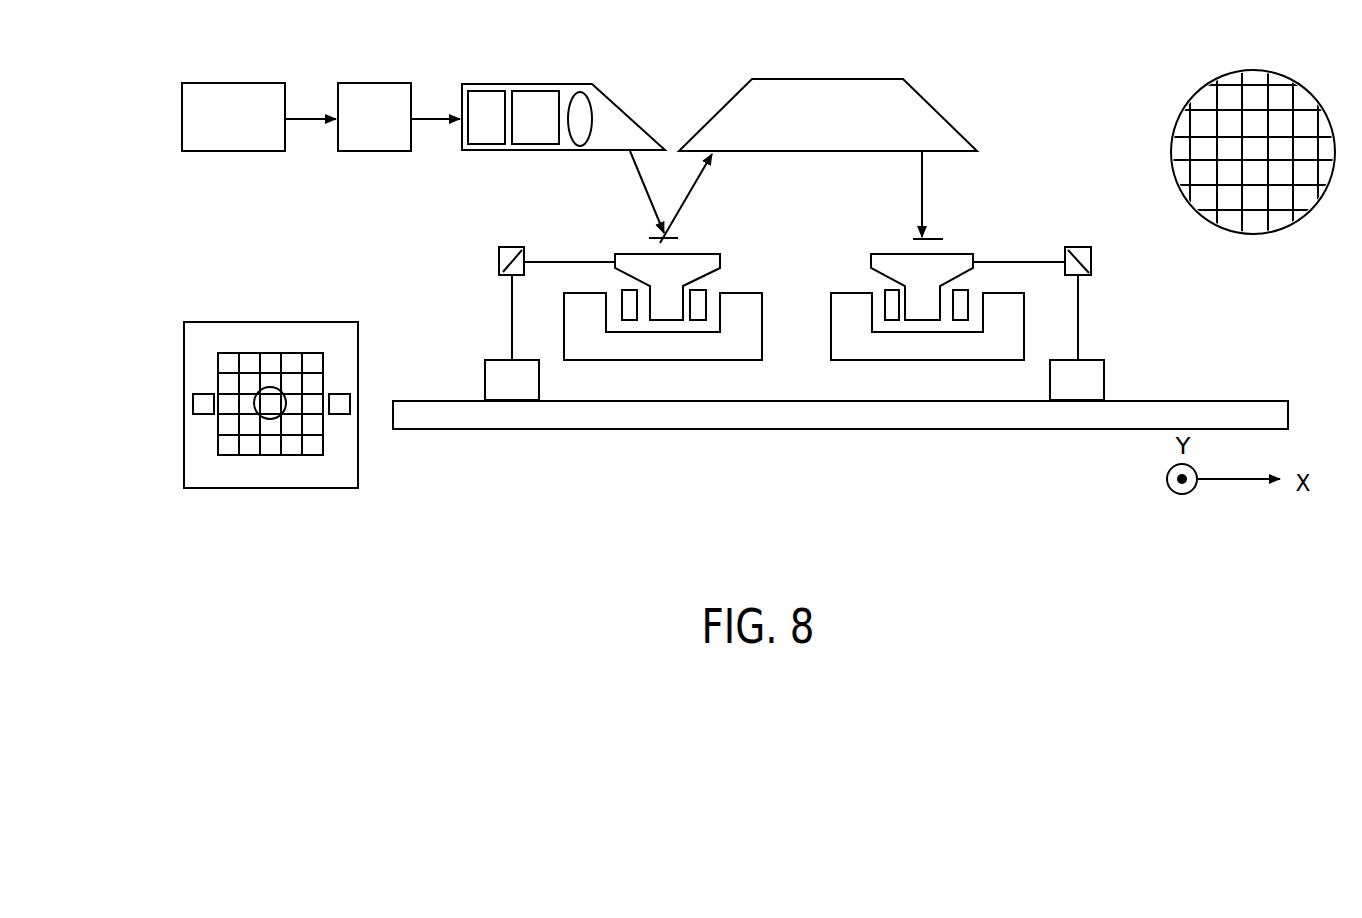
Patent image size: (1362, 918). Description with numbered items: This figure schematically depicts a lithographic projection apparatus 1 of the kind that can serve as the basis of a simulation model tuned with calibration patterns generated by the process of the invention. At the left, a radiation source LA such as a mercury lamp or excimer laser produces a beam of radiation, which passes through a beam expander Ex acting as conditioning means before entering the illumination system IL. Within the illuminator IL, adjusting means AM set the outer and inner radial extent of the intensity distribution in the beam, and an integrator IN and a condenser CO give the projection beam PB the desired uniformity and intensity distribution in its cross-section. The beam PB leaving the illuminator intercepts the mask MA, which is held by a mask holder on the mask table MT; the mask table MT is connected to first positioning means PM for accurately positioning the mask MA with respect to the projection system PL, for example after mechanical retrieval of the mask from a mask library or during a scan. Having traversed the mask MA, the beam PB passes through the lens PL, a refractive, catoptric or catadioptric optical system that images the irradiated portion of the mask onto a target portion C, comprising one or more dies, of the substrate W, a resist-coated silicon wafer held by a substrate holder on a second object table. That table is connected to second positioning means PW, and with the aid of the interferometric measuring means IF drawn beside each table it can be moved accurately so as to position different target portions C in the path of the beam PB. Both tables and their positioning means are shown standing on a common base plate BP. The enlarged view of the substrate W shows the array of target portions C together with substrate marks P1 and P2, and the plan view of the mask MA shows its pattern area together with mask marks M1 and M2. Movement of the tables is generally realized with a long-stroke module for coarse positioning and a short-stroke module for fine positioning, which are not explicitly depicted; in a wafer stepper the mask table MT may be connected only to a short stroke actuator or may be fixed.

The lithographic apparatus 1 is at (677, 64).
The radiation source LA is at (233, 117).
The beam expander Ex is at (374, 117).
The illumination system IL is at (555, 88).
The adjusting means AM is at (492, 91).
The integrator IN is at (540, 91).
The condenser CO is at (580, 92).
The projection beam PB is at (641, 179).
The projection system PL is at (828, 115).
The mask MA is at (665, 238).
The mask table MT is at (665, 320).
The first positioning means PM is at (725, 360).
The second positioning means PW is at (997, 360).
The interferometric measuring means IF is at (508, 247).
The base plate BP is at (840, 415).
The substrate W is at (1142, 139).
The target portion C is at (248, 445).
The substrate alignment mark P1 is at (1232, 160).
The substrate alignment mark P2 is at (1272, 160).
The mask alignment mark M1 is at (205, 414).
The mask alignment mark M2 is at (340, 414).